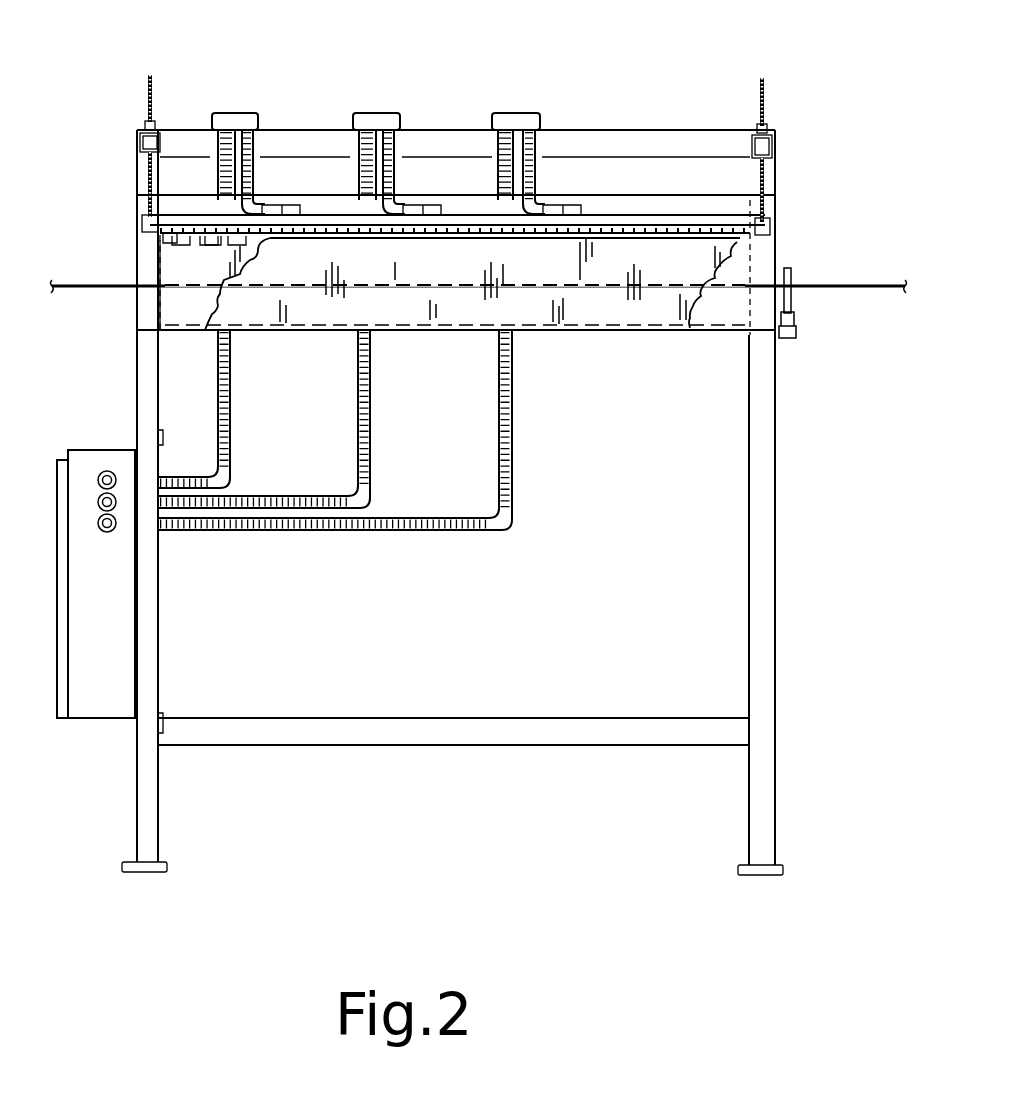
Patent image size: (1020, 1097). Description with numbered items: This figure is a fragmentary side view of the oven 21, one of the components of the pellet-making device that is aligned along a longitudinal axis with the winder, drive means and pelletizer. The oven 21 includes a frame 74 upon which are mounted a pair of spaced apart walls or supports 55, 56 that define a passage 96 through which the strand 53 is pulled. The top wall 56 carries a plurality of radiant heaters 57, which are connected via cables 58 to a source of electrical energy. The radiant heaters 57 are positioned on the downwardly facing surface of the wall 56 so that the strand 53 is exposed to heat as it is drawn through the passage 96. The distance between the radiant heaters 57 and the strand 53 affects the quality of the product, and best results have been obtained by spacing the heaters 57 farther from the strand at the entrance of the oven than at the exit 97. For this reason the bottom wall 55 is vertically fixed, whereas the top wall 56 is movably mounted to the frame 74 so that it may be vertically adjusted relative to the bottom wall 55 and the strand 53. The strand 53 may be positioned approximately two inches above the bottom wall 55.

The oven 21 is at (550, 84).
The strand 53 is at (818, 289).
The bottom wall 55 is at (207, 326).
The top wall 56 is at (216, 240).
The radiant heaters 57 is at (166, 242).
The cables 58 is at (256, 176).
The frame 74 is at (752, 738).
The passage 96 is at (150, 295).
The exit 97 is at (758, 262).